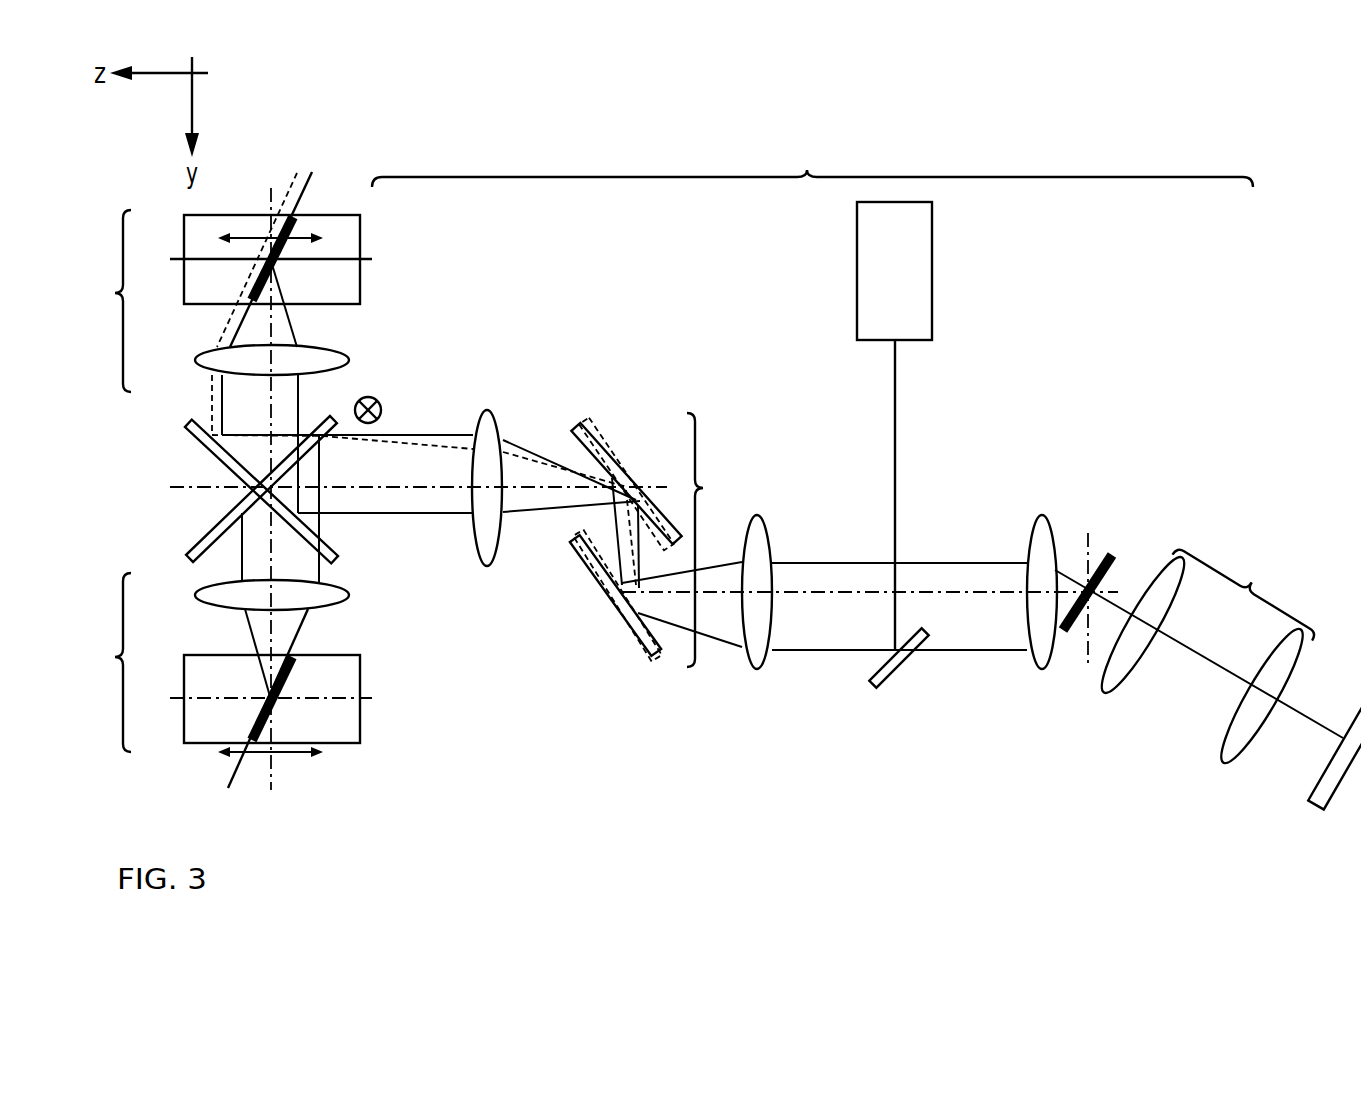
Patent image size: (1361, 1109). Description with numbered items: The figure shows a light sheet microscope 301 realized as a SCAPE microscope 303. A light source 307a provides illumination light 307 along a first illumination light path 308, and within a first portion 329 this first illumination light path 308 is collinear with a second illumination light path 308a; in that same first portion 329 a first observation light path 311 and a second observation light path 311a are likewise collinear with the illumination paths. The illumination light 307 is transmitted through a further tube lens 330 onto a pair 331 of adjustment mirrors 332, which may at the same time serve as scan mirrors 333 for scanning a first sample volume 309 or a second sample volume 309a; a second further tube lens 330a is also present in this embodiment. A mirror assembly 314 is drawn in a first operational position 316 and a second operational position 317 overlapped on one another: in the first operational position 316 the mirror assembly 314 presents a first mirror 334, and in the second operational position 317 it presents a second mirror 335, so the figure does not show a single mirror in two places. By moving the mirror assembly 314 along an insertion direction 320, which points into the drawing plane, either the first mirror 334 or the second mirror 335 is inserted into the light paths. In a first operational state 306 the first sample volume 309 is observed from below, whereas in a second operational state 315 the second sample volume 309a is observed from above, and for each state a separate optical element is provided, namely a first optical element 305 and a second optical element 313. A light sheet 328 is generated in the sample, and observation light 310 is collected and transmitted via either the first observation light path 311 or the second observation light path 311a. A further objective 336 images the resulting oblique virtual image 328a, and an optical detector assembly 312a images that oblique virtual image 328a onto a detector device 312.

The light sheet microscope 301 is at (419, 110).
The SCAPE microscope 303 is at (717, 492).
The first optical element 305 is at (195, 362).
The first operational state 306 is at (102, 301).
The illumination light 307 is at (895, 407).
The light source 307a is at (932, 247).
The first illumination light path 308 is at (855, 676).
The second illumination light path 308a is at (822, 652).
The first sample volume 309 is at (184, 250).
The second sample volume 309a is at (184, 663).
The observation light 310 is at (257, 640).
The first observation light path 311 is at (980, 563).
The second observation light path 311a is at (242, 563).
The detector device 312 is at (1307, 798).
The optical detector assembly 312a is at (1206, 654).
The second optical element 313 is at (195, 595).
The mirror assembly 314 is at (210, 489).
The second operational state 315 is at (102, 662).
The first operational position 316 is at (212, 447).
The second operational position 317 is at (212, 533).
The insertion direction 320 is at (381, 410).
The light sheet 328 is at (252, 270).
The oblique virtual image 328a is at (1068, 630).
The first portion 329 is at (812, 160).
The further tube lens 330 is at (752, 667).
The second further tube lens 330a is at (487, 410).
The pair of adjustment mirrors 331 is at (637, 541).
The adjustment mirror 332 is at (577, 420).
The scan mirror 333 is at (657, 657).
The first mirror 334 is at (210, 492).
The second mirror 335 is at (209, 489).
The further objective 336 is at (1042, 515).